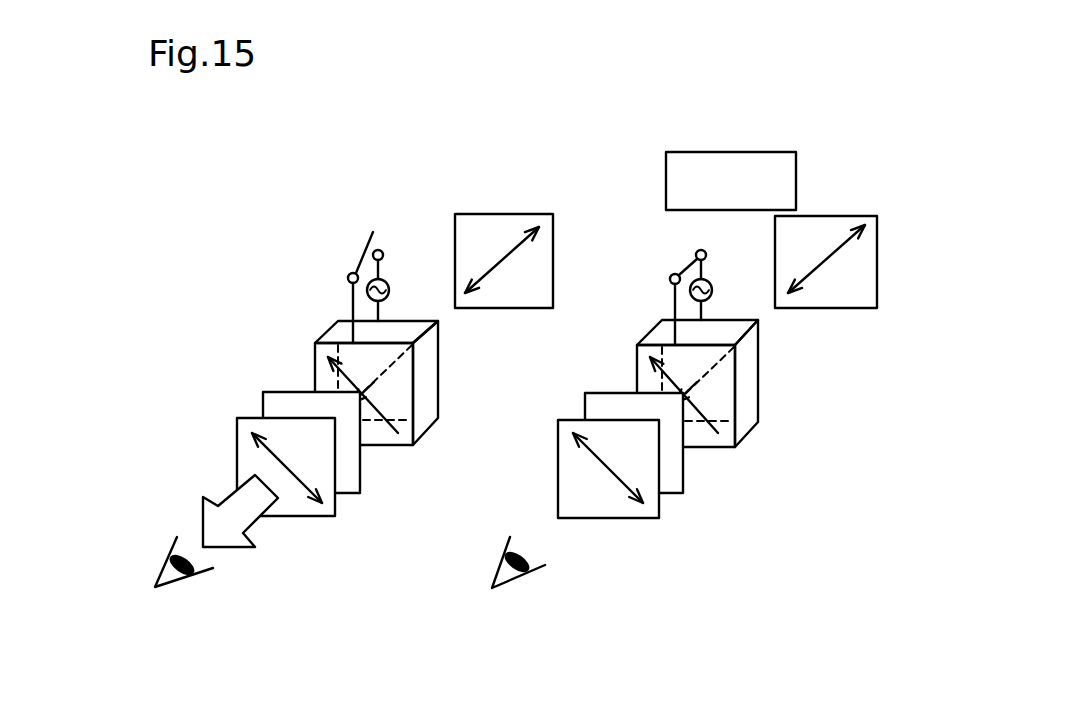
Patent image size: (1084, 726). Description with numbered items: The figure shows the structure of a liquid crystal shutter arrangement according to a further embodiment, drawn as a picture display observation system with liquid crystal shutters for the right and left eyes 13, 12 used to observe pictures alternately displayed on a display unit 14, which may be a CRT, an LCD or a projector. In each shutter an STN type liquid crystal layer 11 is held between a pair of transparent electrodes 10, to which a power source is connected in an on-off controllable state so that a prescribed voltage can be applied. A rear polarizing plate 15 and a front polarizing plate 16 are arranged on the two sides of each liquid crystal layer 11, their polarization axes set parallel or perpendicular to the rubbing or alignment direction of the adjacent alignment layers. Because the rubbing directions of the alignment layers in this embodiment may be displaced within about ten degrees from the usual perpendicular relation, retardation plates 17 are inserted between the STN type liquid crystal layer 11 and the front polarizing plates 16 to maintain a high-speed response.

The transparent electrodes 10 is at (413, 318).
The STN type liquid crystal layer 11 is at (343, 319).
The liquid crystal shutter for left eye 12 is at (178, 582).
The liquid crystal shutter for right eye 13 is at (518, 577).
The display unit 14 is at (670, 193).
The rear polarizing plate 15 is at (472, 213).
The front polarizing plate 16 is at (282, 517).
The retardation plates 17 is at (297, 392).